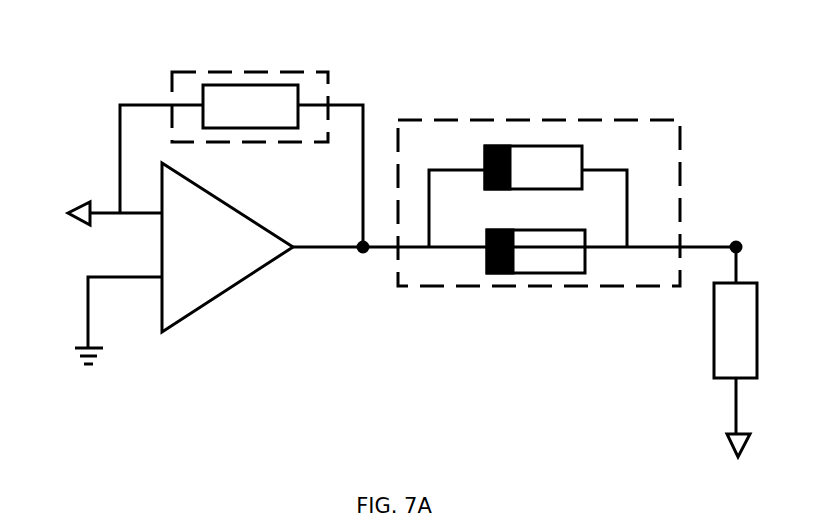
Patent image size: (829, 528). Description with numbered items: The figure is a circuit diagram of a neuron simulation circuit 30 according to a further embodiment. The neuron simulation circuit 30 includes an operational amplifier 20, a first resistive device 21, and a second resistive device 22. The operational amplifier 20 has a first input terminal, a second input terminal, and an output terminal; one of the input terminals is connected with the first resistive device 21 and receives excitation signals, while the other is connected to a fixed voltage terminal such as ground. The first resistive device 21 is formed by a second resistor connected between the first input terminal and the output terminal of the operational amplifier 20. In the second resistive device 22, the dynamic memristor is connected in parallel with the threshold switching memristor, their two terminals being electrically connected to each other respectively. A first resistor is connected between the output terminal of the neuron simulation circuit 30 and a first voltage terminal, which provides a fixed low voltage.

The operational amplifier 20 is at (227, 247).
The first resistive device 21 is at (295, 72).
The second resistive device 22 is at (645, 120).
The neuron simulation circuit 30 is at (414, 34).